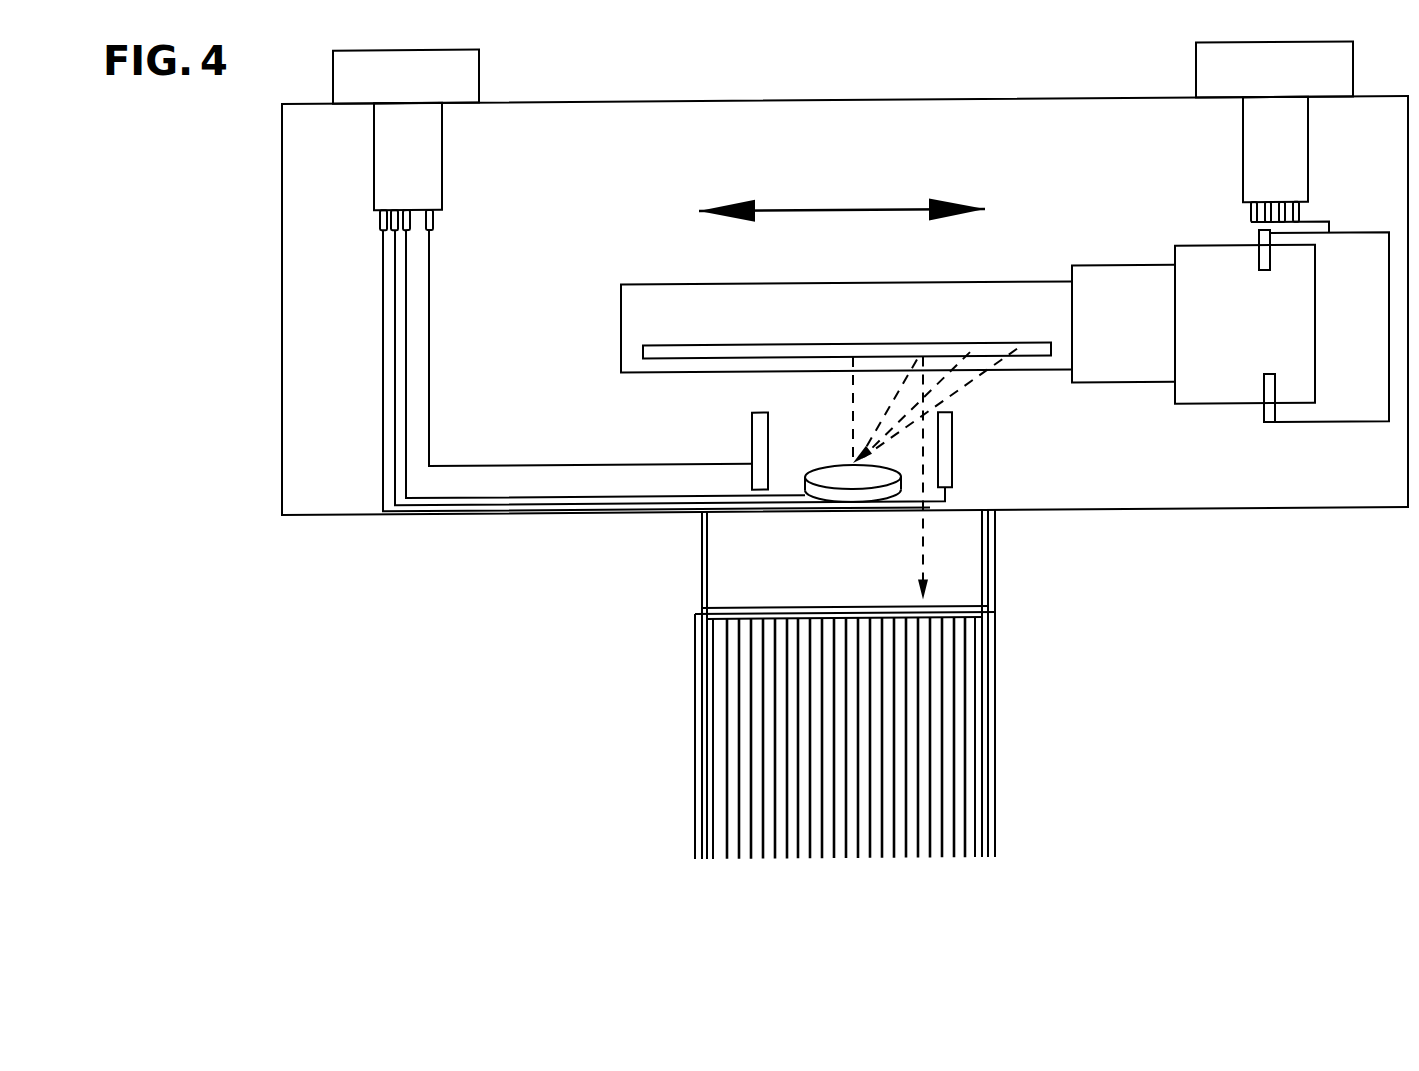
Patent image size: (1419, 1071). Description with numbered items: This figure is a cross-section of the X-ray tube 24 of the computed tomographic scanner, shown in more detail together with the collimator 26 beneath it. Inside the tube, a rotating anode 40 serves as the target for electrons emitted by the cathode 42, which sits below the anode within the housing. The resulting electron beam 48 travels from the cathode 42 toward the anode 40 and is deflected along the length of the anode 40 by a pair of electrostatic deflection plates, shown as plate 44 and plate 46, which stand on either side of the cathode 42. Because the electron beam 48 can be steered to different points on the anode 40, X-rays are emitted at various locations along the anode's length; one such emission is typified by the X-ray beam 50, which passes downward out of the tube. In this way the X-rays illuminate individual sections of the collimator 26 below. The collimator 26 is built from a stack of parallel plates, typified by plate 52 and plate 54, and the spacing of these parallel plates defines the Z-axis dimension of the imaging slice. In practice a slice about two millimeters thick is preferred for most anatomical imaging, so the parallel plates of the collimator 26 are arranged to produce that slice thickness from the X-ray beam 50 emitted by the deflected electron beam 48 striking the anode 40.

The X-ray tube 24 is at (856, 74).
The collimator 26 is at (1020, 695).
The rotating anode 40 is at (885, 285).
The cathode 42 is at (838, 487).
The plate 44 is at (945, 450).
The plate 46 is at (762, 439).
The electron beam 48 is at (901, 475).
The X-ray beam 50 is at (925, 522).
The plate 52 is at (935, 639).
The plate 54 is at (922, 636).